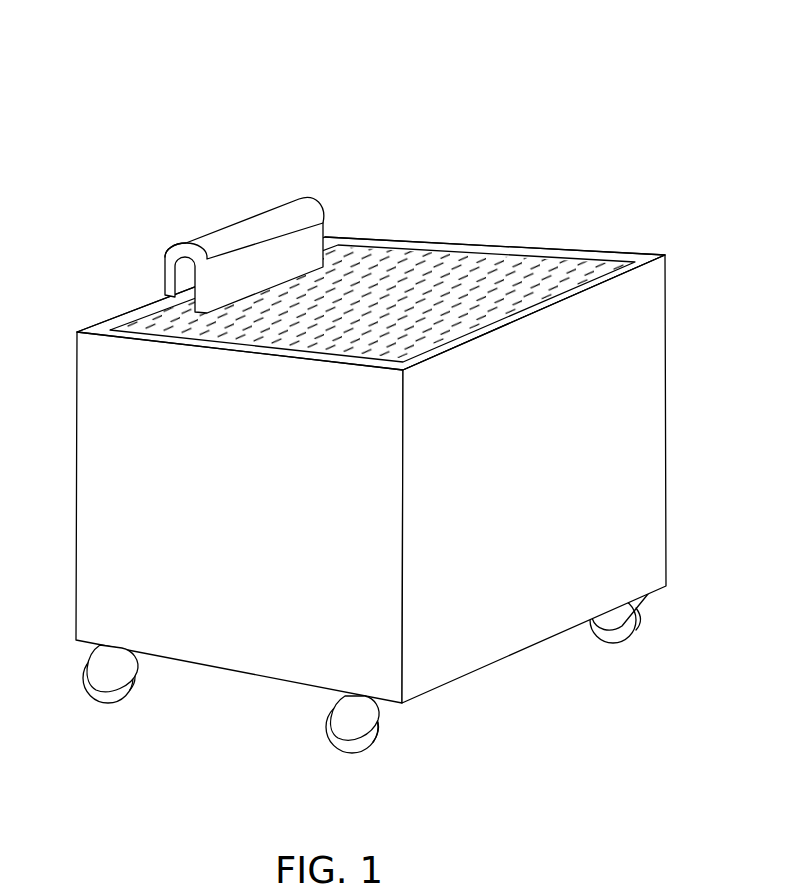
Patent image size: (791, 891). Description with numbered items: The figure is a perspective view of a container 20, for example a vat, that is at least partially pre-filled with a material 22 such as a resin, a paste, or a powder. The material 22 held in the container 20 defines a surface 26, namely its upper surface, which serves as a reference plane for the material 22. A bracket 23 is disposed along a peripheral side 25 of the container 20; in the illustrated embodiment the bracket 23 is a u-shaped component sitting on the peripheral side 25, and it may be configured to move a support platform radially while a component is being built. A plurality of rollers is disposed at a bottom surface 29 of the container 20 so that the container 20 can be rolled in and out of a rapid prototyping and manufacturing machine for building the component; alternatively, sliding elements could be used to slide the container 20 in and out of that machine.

The container 20 is at (635, 75).
The material 22 is at (470, 285).
The bracket 23 is at (240, 232).
The peripheral side 25 is at (113, 323).
The surface 26 is at (403, 280).
The bottom surface 29 is at (487, 665).